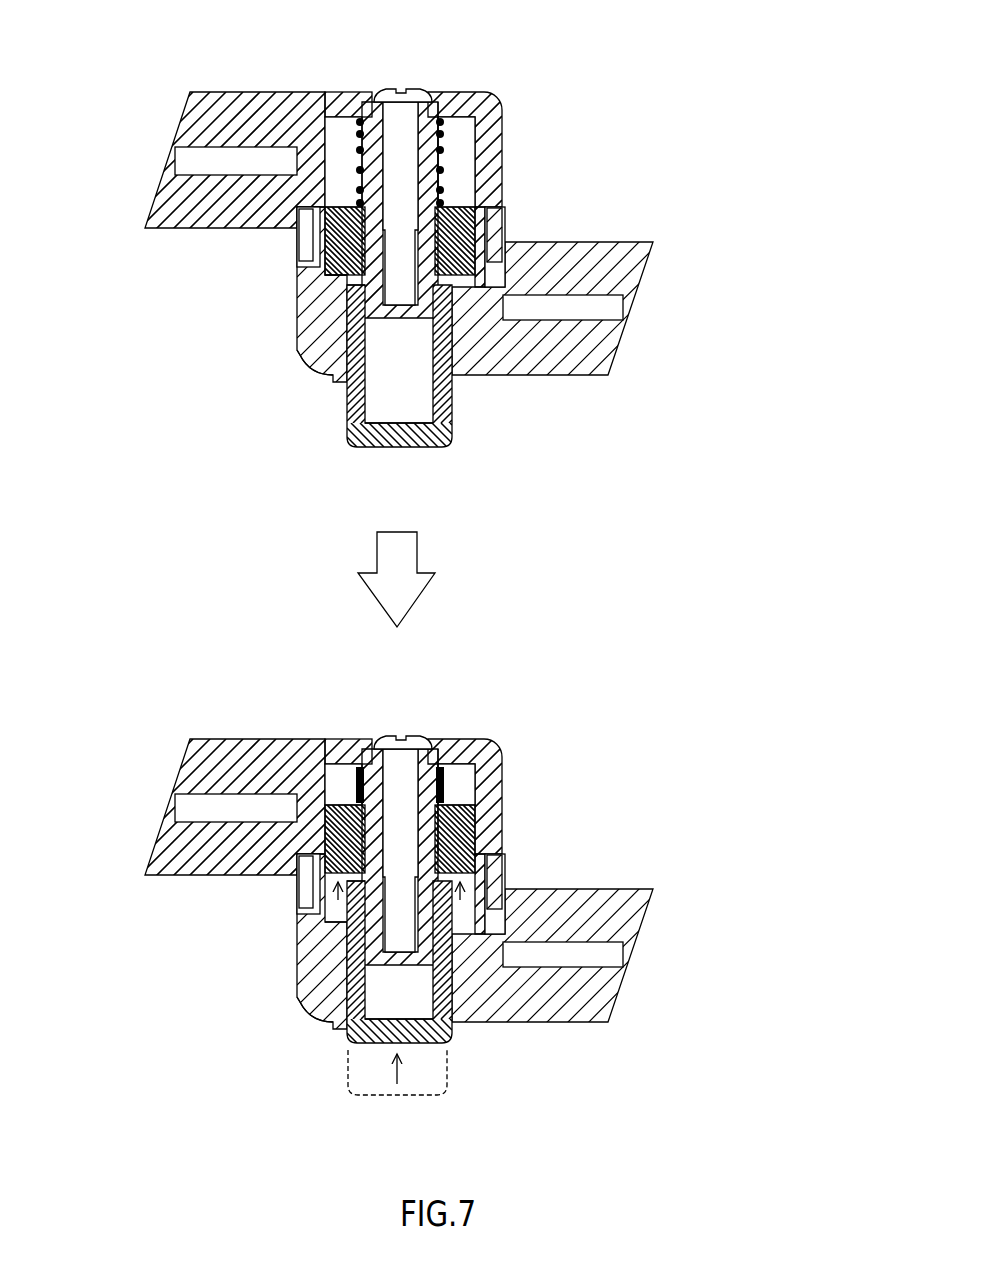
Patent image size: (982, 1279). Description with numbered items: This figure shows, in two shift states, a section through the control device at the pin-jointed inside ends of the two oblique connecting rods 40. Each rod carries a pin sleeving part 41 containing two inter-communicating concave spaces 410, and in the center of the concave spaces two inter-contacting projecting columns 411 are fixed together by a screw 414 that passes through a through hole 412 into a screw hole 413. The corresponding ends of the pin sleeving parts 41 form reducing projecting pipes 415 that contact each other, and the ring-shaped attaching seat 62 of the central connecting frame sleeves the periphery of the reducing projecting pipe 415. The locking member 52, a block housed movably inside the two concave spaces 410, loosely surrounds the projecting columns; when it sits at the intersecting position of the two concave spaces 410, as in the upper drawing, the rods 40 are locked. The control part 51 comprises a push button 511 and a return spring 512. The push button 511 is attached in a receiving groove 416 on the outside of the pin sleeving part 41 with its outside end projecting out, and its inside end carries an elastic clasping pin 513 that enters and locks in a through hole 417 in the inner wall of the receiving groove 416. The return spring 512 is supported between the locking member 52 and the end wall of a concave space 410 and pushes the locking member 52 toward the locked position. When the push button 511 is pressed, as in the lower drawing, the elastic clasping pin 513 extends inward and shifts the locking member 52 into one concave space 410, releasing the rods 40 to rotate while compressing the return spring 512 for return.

The oblique connecting rod 40 is at (212, 93).
The pin sleeving part 41 is at (505, 100).
The concave space 410 is at (335, 193).
The projecting column 411 is at (345, 195).
The through hole 412 is at (405, 230).
The screw hole 413 is at (355, 283).
The screw 414 is at (400, 90).
The reducing projecting pipe 415 is at (495, 215).
The receiving groove 416 is at (358, 345).
The through hole 417 is at (360, 320).
The control part 51 is at (456, 429).
The push button 511 is at (430, 448).
The return spring 512 is at (425, 160).
The elastic clasping pin 513 is at (353, 295).
The locking member 52 is at (465, 240).
The attaching seat 62 is at (490, 215).